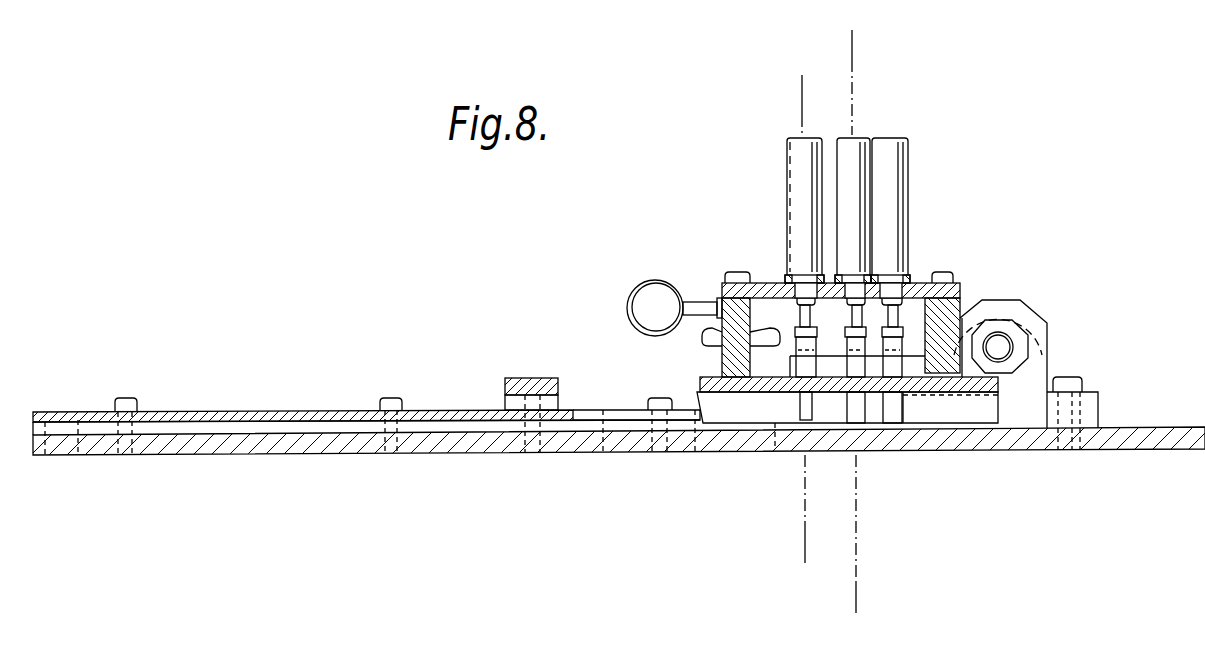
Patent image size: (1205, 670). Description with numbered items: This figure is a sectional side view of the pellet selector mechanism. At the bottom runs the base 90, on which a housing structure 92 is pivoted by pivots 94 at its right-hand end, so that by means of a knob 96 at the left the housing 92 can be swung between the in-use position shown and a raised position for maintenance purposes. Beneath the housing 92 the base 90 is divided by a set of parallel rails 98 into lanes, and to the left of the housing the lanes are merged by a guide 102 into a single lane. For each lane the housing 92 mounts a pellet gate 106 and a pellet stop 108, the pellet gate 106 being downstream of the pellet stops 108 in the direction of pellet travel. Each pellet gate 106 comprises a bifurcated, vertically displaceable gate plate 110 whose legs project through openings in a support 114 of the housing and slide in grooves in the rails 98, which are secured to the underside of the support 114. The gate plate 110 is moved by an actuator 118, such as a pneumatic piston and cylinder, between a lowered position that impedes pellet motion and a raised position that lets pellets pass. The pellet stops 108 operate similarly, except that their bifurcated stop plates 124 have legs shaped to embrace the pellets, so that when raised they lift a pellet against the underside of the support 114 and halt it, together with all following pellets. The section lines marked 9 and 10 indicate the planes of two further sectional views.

The base 90 is at (955, 437).
The housing structure 92 is at (930, 241).
The pivots 94 is at (1000, 345).
The knob 96 is at (645, 306).
The rails 98 is at (735, 412).
The guide 102 is at (432, 410).
The pellet gate 106 is at (792, 147).
The pellet stop 108 is at (857, 148).
The gate plate 110 is at (800, 410).
The support 114 is at (945, 382).
The actuator 118 is at (790, 176).
The stop plates 124 is at (893, 412).
The section line 9- 9 is at (843, 35).
The section line 10- 10 is at (793, 95).